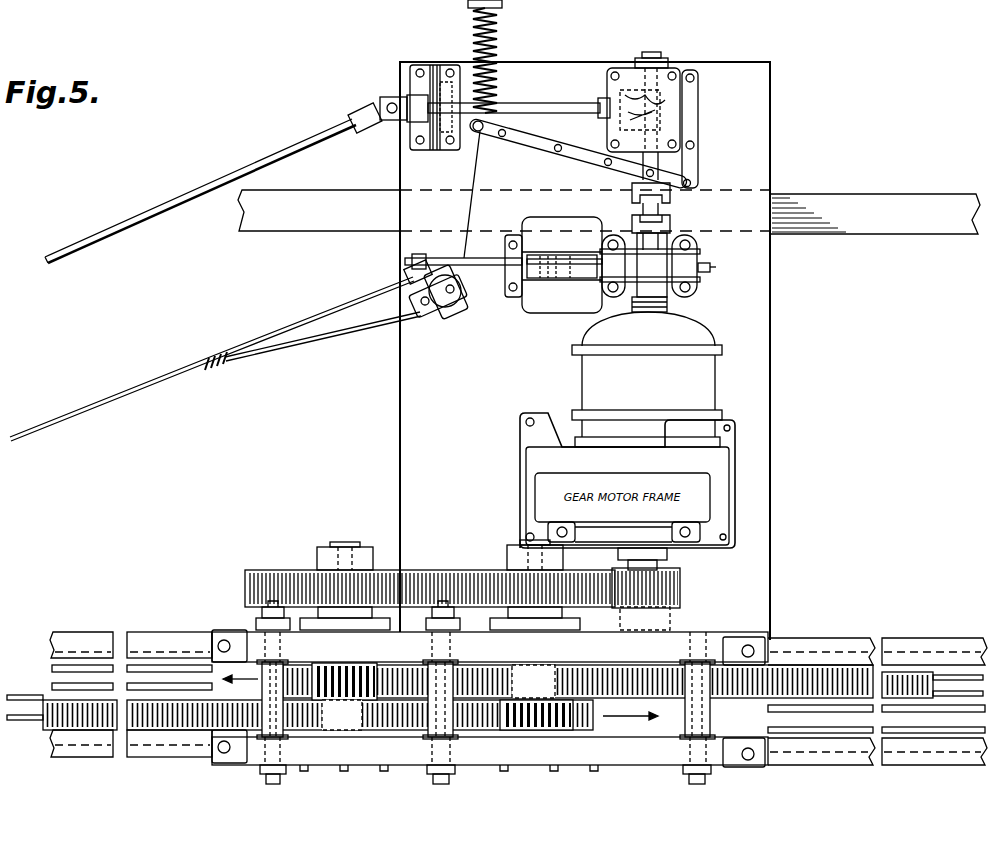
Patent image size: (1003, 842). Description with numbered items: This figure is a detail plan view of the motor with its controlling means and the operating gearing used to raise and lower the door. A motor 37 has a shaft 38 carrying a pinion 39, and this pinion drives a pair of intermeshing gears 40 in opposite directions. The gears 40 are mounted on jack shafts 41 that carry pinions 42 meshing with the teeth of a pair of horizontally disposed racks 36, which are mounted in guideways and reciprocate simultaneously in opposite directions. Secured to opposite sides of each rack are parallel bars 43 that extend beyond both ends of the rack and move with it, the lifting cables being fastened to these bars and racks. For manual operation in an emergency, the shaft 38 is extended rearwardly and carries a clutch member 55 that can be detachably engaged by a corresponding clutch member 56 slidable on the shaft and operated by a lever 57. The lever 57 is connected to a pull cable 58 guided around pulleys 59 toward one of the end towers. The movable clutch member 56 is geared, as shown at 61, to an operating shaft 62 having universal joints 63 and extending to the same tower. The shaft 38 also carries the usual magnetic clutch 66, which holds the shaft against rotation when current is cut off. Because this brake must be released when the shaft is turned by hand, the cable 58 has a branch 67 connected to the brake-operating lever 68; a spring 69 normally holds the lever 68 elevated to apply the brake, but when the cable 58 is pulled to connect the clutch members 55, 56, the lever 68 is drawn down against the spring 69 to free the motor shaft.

The racks 36 is at (297, 680).
The motor 37 is at (582, 380).
The shaft 38 is at (668, 560).
The pinion 39 is at (682, 594).
The intermeshing gears 40 is at (462, 572).
The jack shafts 41 is at (343, 542).
The pinions 42 is at (593, 752).
The parallel bars 43 is at (152, 690).
The clutch member 55 is at (672, 222).
The clutch member 56 is at (632, 192).
The lever 57 is at (568, 152).
The pull cable 58 is at (478, 168).
The pulleys 59 is at (468, 292).
The gearing 61 is at (668, 125).
The operating shaft 62 is at (178, 188).
The universal joints 63 is at (390, 101).
The magnetic clutch 66 is at (680, 298).
The branch 67 is at (330, 308).
The brake-operating lever 68 is at (456, 251).
The spring 69 is at (498, 42).